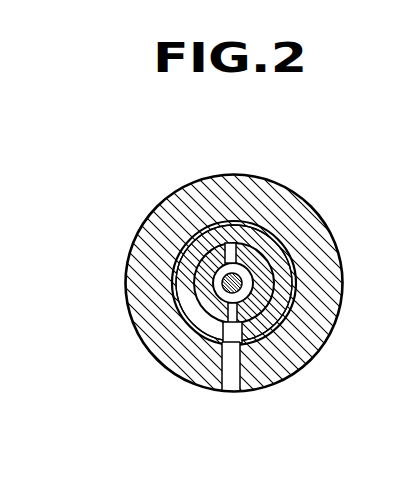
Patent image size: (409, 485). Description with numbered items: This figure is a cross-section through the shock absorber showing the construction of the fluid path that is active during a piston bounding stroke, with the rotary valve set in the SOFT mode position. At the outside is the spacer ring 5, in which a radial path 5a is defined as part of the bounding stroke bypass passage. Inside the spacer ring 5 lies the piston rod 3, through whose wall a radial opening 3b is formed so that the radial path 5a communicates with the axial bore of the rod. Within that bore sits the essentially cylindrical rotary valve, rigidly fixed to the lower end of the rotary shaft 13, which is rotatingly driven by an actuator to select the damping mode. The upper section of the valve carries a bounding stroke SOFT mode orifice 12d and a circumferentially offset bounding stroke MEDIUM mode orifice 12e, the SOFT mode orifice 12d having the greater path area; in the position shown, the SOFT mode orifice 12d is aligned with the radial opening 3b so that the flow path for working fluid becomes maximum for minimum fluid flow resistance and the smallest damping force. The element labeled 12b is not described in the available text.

The spacer ring 5 is at (311, 199).
The radial path 5a is at (228, 368).
The piston rod 3 is at (174, 278).
The radial opening 3b is at (272, 348).
The inner sleeve 12b is at (191, 298).
The bounding stroke SOFT mode orifice 12d is at (237, 312).
The bounding stroke MEDIUM mode orifice 12e is at (181, 226).
The rotary shaft 13 is at (242, 278).